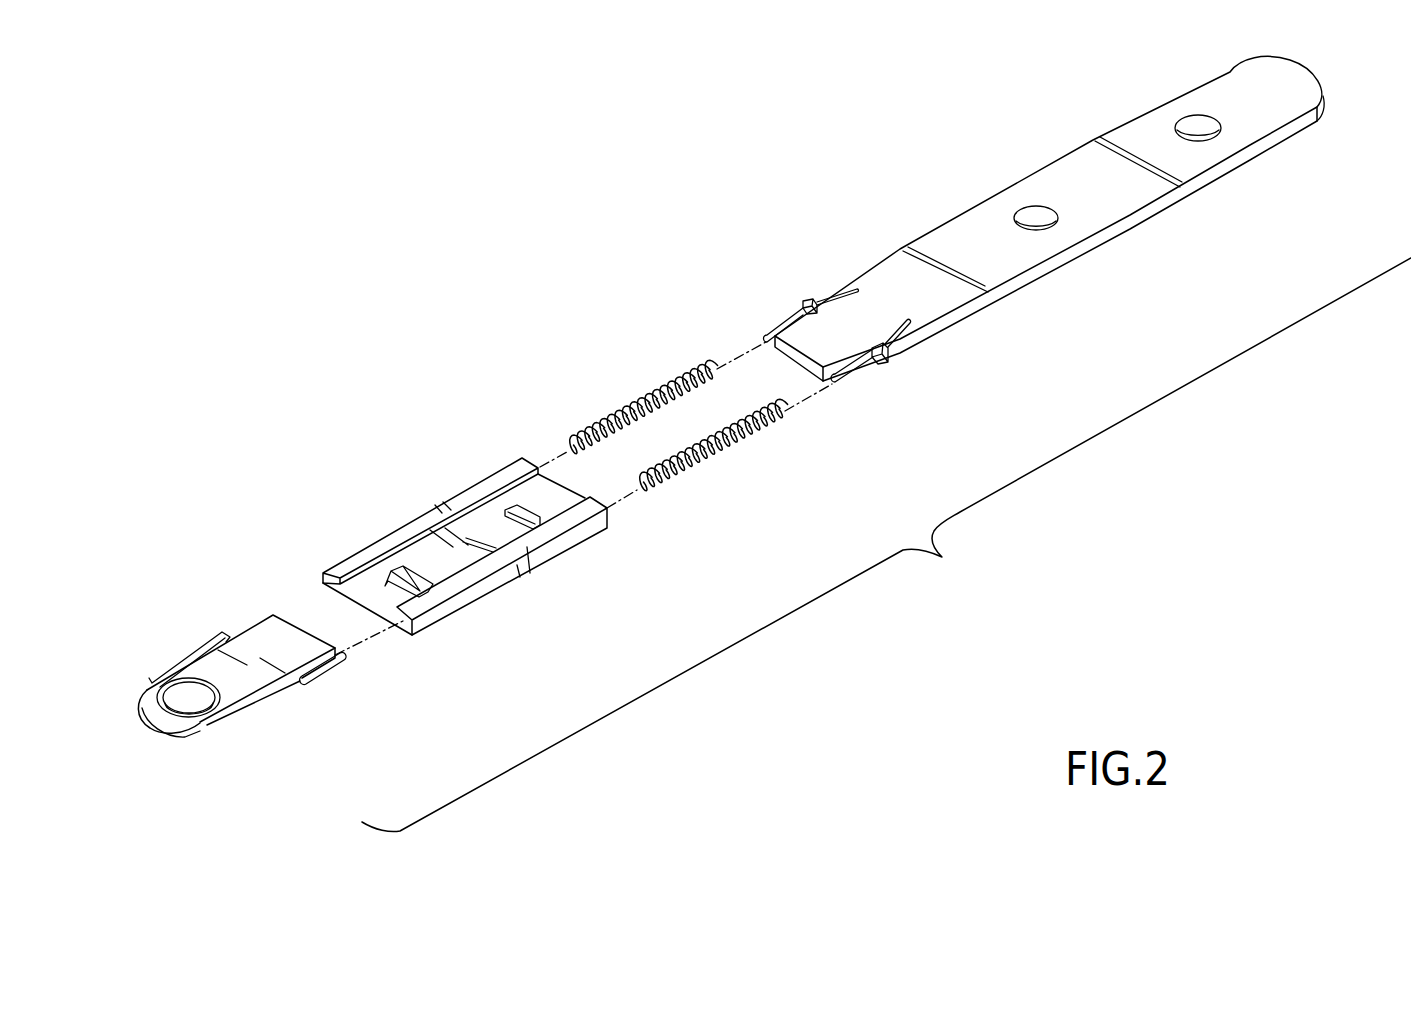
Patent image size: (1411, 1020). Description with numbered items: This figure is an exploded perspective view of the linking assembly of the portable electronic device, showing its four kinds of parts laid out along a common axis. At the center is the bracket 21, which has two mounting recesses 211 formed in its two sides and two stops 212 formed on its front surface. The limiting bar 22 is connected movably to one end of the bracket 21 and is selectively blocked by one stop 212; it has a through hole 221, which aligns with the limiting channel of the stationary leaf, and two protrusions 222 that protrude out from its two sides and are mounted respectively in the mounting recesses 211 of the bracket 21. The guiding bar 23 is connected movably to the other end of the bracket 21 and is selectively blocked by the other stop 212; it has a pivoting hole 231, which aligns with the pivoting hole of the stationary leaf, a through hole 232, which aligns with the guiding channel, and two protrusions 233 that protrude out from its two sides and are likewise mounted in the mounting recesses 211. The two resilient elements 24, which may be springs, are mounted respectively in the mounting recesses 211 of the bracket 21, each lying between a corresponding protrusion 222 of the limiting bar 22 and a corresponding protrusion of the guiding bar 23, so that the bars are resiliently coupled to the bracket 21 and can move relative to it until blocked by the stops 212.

The bracket 21 is at (411, 556).
The mounting recesses 211 is at (320, 575).
The stops 212 is at (418, 588).
The limiting bar 22 is at (262, 692).
The through hole 221 is at (178, 700).
The protrusions 222 is at (328, 668).
The guiding bar 23 is at (1080, 160).
The pivoting hole 231 is at (1043, 225).
The through hole 232 is at (1195, 122).
The protrusions 233 is at (862, 368).
The resilient elements 24 is at (712, 452).